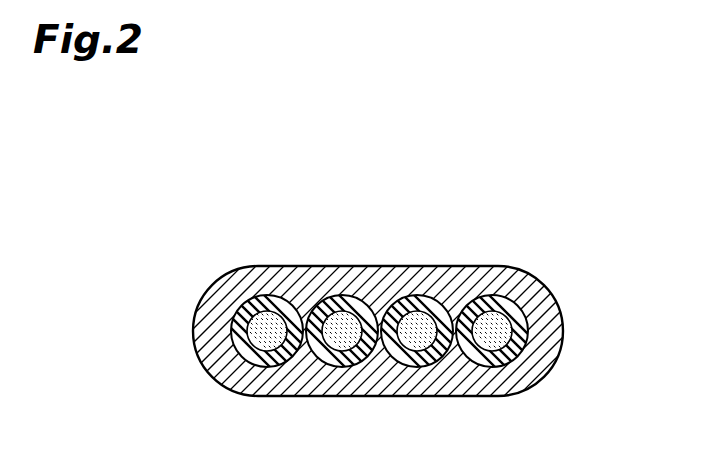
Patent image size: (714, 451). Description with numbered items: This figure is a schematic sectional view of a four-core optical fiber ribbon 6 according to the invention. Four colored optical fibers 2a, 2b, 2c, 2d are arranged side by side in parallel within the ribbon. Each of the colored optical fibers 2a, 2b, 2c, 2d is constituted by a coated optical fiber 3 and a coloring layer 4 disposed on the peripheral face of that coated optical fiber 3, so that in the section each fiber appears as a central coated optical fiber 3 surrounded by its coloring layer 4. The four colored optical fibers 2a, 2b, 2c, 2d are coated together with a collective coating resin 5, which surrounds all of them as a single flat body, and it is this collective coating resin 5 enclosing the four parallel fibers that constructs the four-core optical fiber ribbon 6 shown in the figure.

The four-core optical fiber ribbon 6 is at (630, 178).
The collective coating resin 5 is at (561, 317).
The colored optical fiber 2a is at (260, 257).
The colored optical fiber 2b is at (335, 257).
The colored optical fiber 2c is at (410, 257).
The colored optical fiber 2d is at (485, 257).
The coated optical fiber 3 is at (266, 326).
The coloring layer 4 is at (276, 306).